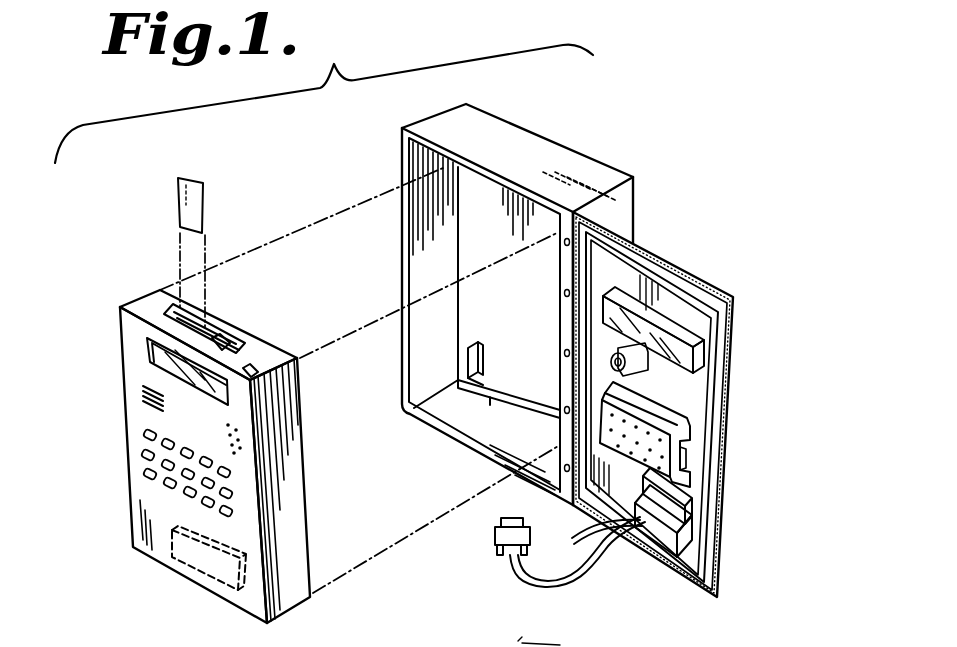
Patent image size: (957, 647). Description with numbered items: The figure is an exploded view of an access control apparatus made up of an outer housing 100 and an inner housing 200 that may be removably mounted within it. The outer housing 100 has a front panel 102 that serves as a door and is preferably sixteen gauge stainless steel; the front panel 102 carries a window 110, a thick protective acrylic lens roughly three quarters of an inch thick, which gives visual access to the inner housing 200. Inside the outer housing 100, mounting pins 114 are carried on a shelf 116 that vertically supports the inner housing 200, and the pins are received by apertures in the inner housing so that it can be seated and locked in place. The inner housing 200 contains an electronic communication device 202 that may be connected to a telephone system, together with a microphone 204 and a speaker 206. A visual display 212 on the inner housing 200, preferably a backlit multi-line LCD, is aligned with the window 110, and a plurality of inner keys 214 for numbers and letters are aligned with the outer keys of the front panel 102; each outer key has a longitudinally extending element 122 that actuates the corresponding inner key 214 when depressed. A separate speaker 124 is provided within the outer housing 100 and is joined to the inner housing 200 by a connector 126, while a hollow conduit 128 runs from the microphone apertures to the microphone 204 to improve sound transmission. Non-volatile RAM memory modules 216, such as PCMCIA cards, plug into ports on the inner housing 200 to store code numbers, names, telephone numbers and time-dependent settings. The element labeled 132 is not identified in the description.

The outer housing 100 is at (603, 128).
The front panel 102 is at (620, 268).
The window 110 is at (660, 336).
The mounting pins 114 is at (484, 366).
The shelf 116 is at (511, 388).
The longitudinally extending element 122 is at (653, 440).
The speaker 124 is at (692, 543).
The connector 126 is at (515, 572).
The hollow conduit 128 is at (612, 360).
The slot 132 is at (688, 462).
The inner housing 200 is at (257, 318).
The electronic communication device 202 is at (223, 570).
The microphone 204 is at (240, 440).
The speaker 206 is at (140, 398).
The visual display 212 is at (148, 364).
The inner keys 214 is at (160, 500).
The non-volatile RAM memory modules 216 is at (183, 210).